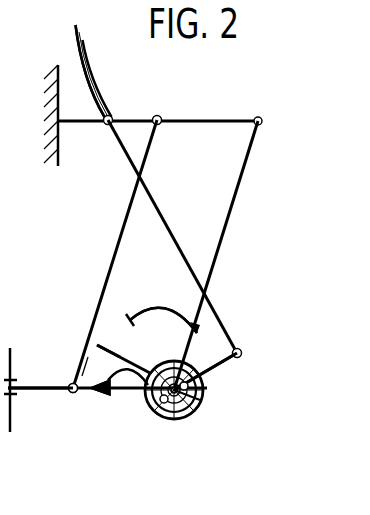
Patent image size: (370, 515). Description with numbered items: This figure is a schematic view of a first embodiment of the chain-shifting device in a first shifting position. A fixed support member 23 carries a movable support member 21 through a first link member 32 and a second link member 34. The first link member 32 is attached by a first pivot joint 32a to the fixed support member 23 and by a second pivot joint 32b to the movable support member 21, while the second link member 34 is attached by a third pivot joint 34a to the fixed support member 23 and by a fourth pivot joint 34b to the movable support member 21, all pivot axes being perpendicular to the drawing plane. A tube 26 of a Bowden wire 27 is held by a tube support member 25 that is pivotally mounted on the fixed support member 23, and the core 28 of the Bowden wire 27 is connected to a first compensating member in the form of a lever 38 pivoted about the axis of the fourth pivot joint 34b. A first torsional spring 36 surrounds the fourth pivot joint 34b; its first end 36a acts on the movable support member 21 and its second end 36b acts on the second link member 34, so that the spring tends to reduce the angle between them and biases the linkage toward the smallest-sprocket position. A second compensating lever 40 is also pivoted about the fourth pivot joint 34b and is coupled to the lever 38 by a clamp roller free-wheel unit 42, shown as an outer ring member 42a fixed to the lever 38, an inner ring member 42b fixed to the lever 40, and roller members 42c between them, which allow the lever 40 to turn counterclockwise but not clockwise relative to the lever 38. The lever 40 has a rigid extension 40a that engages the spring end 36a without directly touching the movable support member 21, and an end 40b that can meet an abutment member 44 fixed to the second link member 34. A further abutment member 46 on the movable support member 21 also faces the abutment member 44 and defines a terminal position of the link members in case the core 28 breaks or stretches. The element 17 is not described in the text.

The support rod 17 is at (10, 426).
The movable support member 21 is at (46, 390).
The fixed support member 23 is at (134, 123).
The tube support member 25 is at (112, 116).
The tube 26 is at (79, 60).
The Bowden wire 27 is at (100, 62).
The core 28 is at (149, 192).
The first link member 32 is at (124, 222).
The first pivot joint 32a is at (159, 116).
The second pivot joint 32b is at (74, 394).
The second link member 34 is at (237, 192).
The third pivot joint 34a is at (258, 117).
The fourth pivot joint 34b is at (204, 406).
The first torsional spring 36 is at (188, 416).
The first end of torsional spring 36a is at (98, 394).
The second end of torsional spring 36b is at (203, 328).
The lever 38 is at (242, 356).
The lever 40 is at (132, 364).
The rigid extension 40a is at (75, 372).
The end of lever 40b is at (115, 352).
The clamp roller free-wheel unit 42 is at (208, 393).
The outer ring member 42a is at (167, 418).
The inner ring member 42b is at (182, 304).
The roller members 42c is at (217, 391).
The abutment member 44 is at (150, 304).
The further abutment member 46 is at (78, 373).